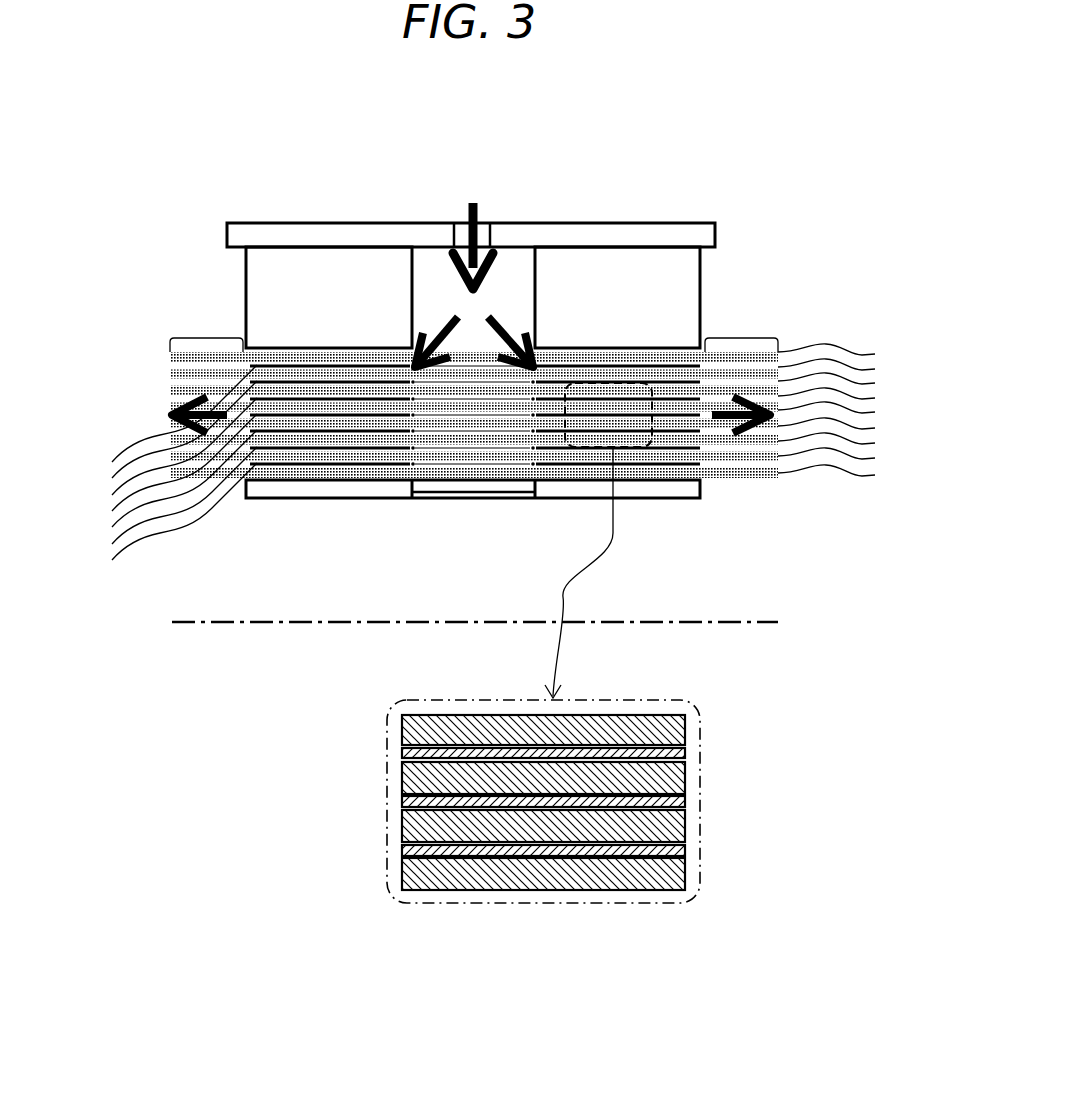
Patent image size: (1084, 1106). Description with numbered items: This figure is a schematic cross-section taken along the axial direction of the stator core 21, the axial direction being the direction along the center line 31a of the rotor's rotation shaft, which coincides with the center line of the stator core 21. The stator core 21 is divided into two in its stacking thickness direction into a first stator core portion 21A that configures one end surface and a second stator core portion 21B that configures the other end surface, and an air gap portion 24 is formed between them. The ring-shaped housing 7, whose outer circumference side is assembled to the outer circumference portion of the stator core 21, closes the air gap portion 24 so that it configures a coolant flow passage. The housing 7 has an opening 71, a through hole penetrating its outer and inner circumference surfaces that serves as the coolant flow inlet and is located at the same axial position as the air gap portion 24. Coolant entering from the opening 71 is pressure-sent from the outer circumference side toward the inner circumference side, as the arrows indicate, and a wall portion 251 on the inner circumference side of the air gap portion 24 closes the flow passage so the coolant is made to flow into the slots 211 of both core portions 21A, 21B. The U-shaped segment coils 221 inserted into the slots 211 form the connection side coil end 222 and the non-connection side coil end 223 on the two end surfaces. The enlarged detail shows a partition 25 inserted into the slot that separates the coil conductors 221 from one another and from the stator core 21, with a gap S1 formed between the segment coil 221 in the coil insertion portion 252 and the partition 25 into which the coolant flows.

The housing 7 is at (665, 232).
The opening 71 is at (465, 232).
The air gap portion 24 is at (433, 263).
The stator core 21 is at (474, 296).
The first stator core portion 21A is at (683, 287).
The second stator core portion 21B is at (265, 287).
The segment coil 221 is at (878, 353).
The connection side coil end 222 is at (740, 338).
The non-connection side coil end 223 is at (207, 338).
The partition 25 is at (110, 443).
The wall portion 251 is at (433, 500).
The slot 211 is at (590, 352).
The center line 31a is at (212, 628).
The gap S1 is at (685, 748).
The coil insertion portion 252 is at (649, 796).